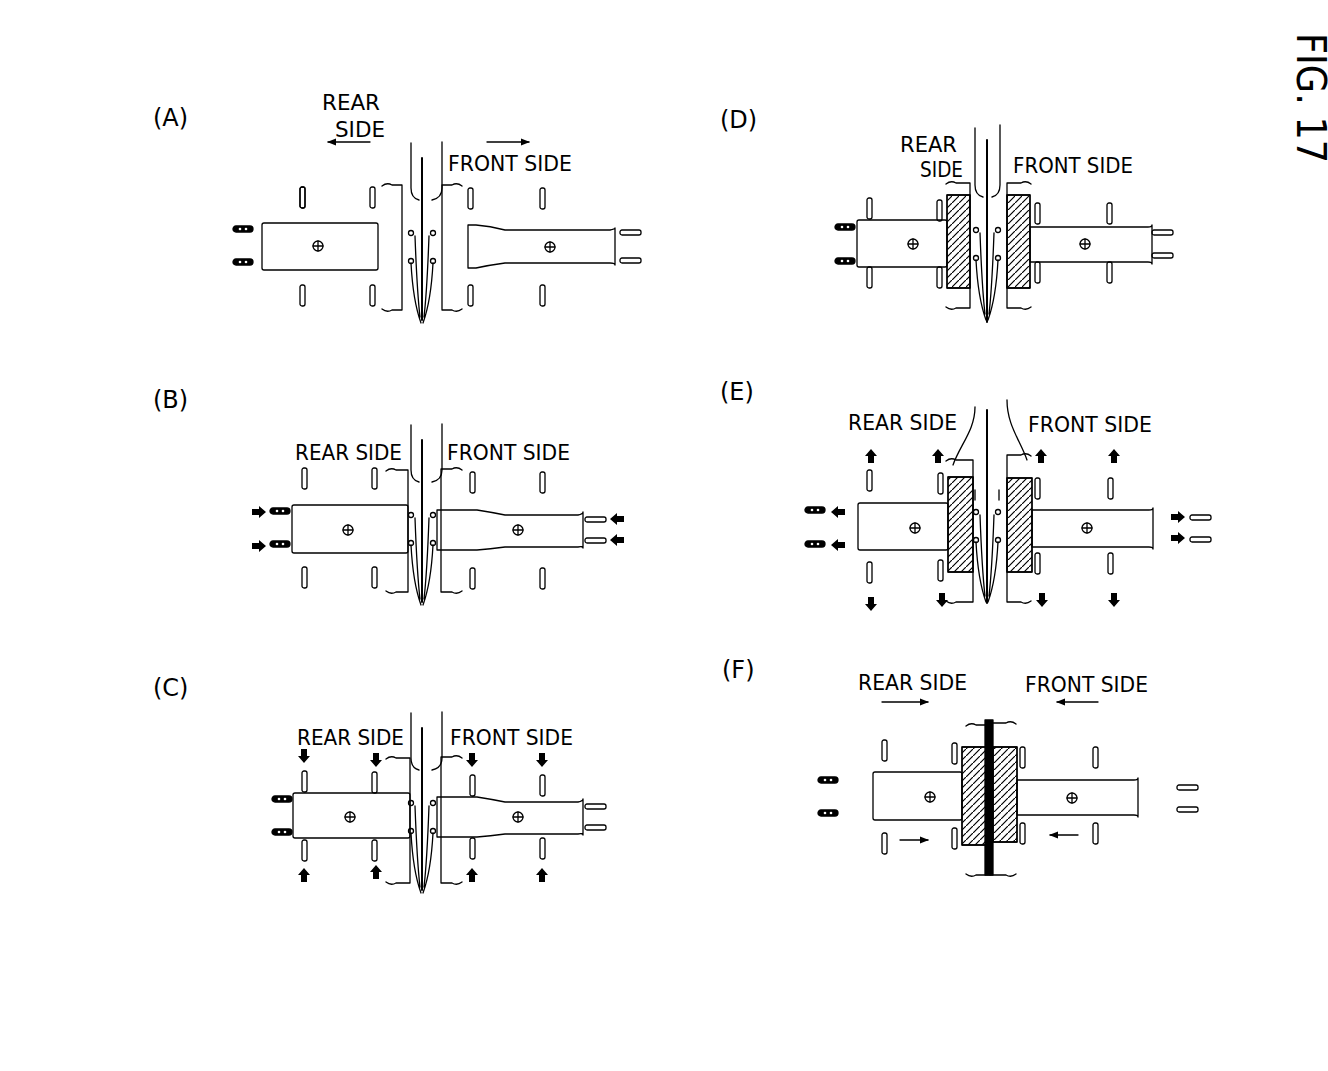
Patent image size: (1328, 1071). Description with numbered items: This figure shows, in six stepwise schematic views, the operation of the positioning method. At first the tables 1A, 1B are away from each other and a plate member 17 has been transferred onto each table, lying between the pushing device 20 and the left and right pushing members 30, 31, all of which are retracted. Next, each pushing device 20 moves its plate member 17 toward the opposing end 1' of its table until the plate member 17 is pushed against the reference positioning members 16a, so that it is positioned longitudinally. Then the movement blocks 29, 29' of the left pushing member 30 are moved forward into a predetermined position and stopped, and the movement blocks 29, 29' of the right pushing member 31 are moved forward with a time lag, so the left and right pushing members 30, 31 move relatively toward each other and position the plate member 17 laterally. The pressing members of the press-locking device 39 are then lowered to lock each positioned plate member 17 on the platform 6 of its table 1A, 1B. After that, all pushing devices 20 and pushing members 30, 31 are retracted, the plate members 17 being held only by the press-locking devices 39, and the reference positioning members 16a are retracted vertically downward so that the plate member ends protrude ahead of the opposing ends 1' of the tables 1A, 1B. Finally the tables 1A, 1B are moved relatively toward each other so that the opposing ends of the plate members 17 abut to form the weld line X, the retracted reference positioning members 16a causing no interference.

The pushing device 20 is at (236, 218).
The left pushing member 30 is at (297, 196).
The right pushing member 31 is at (297, 301).
The plate member 17 is at (283, 237).
The movement block 29 is at (349, 200).
The movement block 29' is at (305, 163).
The table 1A is at (692, 437).
The table 1B is at (731, 435).
The opposing end 1' is at (988, 465).
The reference positioning member 16a is at (711, 536).
The press-locking device 39 is at (943, 192).
The platform 6 is at (955, 287).
The weld line X is at (1000, 840).